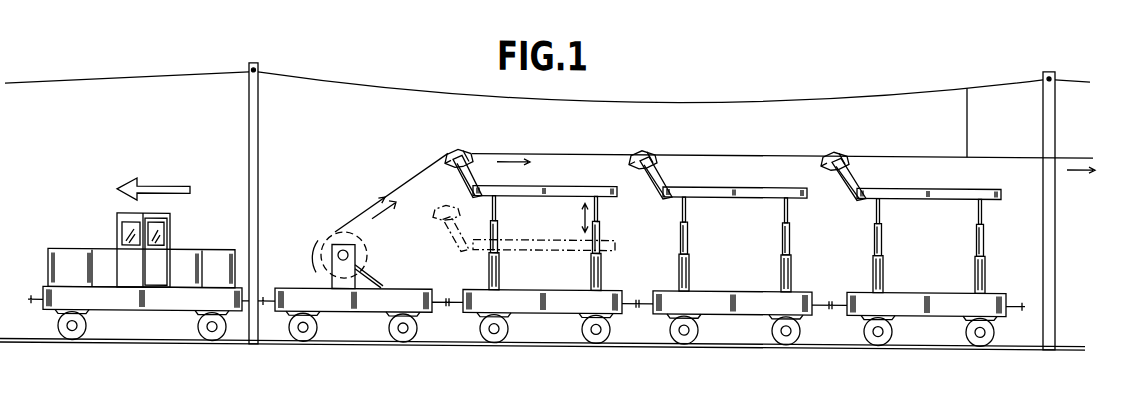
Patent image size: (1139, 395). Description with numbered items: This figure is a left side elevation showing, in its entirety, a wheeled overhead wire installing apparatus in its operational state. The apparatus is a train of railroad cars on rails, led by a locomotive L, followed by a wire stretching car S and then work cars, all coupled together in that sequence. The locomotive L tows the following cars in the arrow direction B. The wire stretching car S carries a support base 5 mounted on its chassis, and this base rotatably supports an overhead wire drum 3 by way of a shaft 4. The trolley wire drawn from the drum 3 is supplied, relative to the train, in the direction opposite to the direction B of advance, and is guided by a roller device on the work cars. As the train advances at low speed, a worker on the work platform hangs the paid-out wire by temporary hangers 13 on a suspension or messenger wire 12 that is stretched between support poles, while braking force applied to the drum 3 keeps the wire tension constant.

The overhead wire drum 3 is at (365, 242).
The shaft 4 is at (343, 250).
The support base 5 is at (377, 274).
The suspension wire 12 is at (785, 92).
The temporary hangers 13 is at (967, 115).
The wire stretching car S is at (348, 310).
The locomotive L is at (140, 314).
The arrow direction B is at (153, 179).